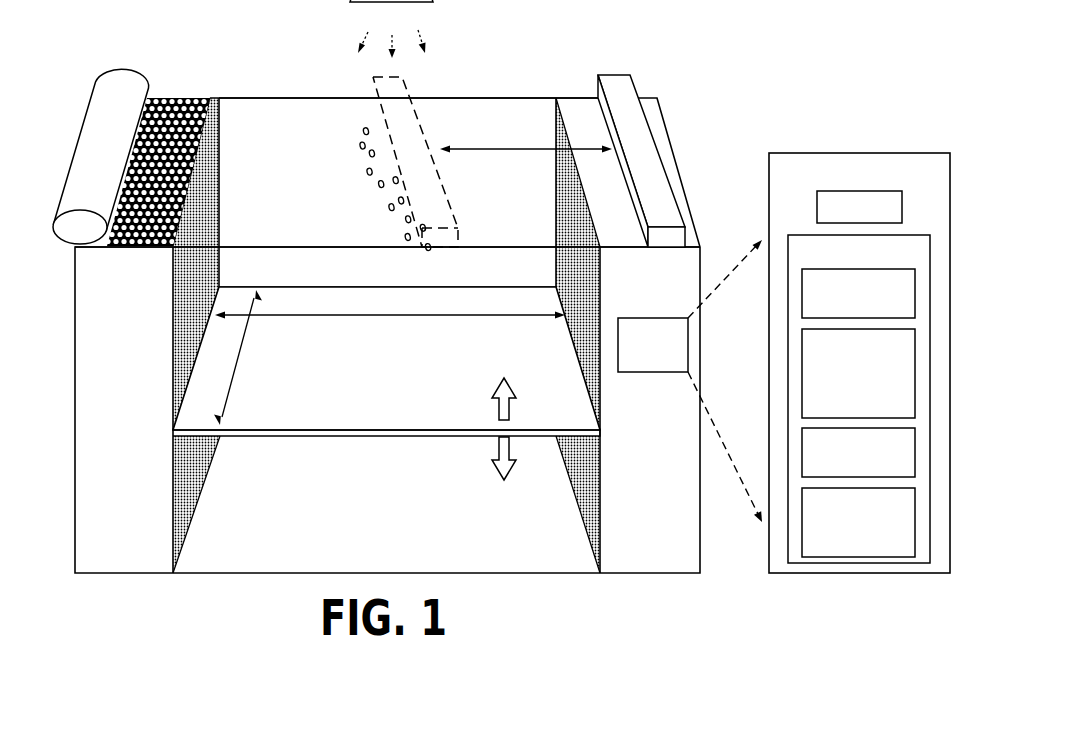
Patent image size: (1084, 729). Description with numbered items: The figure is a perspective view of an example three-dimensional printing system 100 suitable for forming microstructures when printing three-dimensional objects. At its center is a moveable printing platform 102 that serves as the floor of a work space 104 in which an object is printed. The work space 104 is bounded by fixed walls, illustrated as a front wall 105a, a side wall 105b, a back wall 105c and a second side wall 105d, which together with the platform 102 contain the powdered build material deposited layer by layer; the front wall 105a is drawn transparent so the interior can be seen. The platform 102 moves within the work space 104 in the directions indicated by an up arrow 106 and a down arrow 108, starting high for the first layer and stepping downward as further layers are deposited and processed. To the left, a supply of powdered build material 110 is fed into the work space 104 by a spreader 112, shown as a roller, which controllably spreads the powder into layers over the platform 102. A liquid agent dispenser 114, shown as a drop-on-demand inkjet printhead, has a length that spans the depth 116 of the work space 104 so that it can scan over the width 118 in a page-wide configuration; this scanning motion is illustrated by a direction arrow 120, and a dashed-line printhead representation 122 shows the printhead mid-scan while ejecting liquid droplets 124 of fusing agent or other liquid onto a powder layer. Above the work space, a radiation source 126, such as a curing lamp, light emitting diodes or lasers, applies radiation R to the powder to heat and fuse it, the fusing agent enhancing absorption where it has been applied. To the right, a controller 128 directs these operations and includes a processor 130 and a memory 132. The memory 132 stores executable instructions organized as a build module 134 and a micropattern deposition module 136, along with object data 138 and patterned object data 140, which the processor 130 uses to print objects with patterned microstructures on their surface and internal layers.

The three-dimensional printing system 100 is at (750, 66).
The printing platform 102 is at (290, 437).
The work space 104 is at (486, 122).
The front wall 105a is at (317, 246).
The side wall 105b is at (213, 194).
The back wall 105c is at (288, 98).
The side wall 105d is at (562, 205).
The up arrow 106 is at (510, 400).
The down arrow 108 is at (511, 452).
The supply of powdered build material 110 is at (142, 246).
The spreader 112 is at (125, 80).
The liquid agent dispenser 114 is at (663, 192).
The depth 116 is at (240, 356).
The width 118 is at (468, 316).
The direction arrow 120 is at (500, 148).
The dashed-line printhead representation 122 is at (410, 100).
The liquid droplets 124 is at (380, 184).
The radiation source 126 is at (360, 18).
The radiation R is at (428, 33).
The controller 128 is at (784, 363).
The processor 130 is at (859, 207).
The memory 132 is at (859, 399).
The build module 134 is at (858, 293).
The micropattern deposition module 136 is at (858, 373).
The object data 138 is at (858, 452).
The patterned object data 140 is at (858, 522).